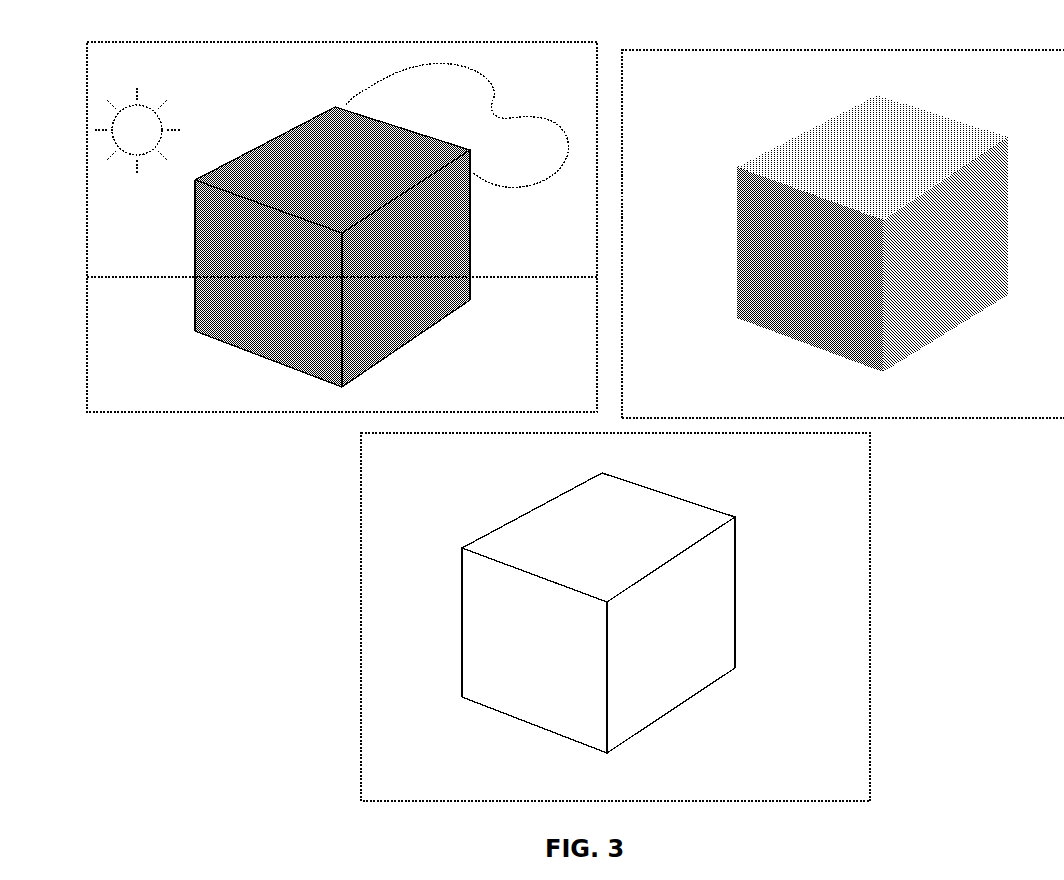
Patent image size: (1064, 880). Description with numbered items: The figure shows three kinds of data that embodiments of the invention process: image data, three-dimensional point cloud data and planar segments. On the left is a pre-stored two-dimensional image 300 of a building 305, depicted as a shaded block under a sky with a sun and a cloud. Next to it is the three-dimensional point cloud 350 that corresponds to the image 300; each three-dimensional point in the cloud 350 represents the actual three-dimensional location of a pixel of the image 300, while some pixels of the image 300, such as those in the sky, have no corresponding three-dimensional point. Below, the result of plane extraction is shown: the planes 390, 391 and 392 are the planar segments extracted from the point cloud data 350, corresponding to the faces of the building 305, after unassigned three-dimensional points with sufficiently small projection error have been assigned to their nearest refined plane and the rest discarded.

The pre-stored 2D image 300 is at (157, 405).
The building 305 is at (240, 145).
The 3D point cloud 350 is at (750, 135).
The extracted plane 390 is at (543, 655).
The extracted plane 391 is at (695, 628).
The extracted plane 392 is at (626, 541).